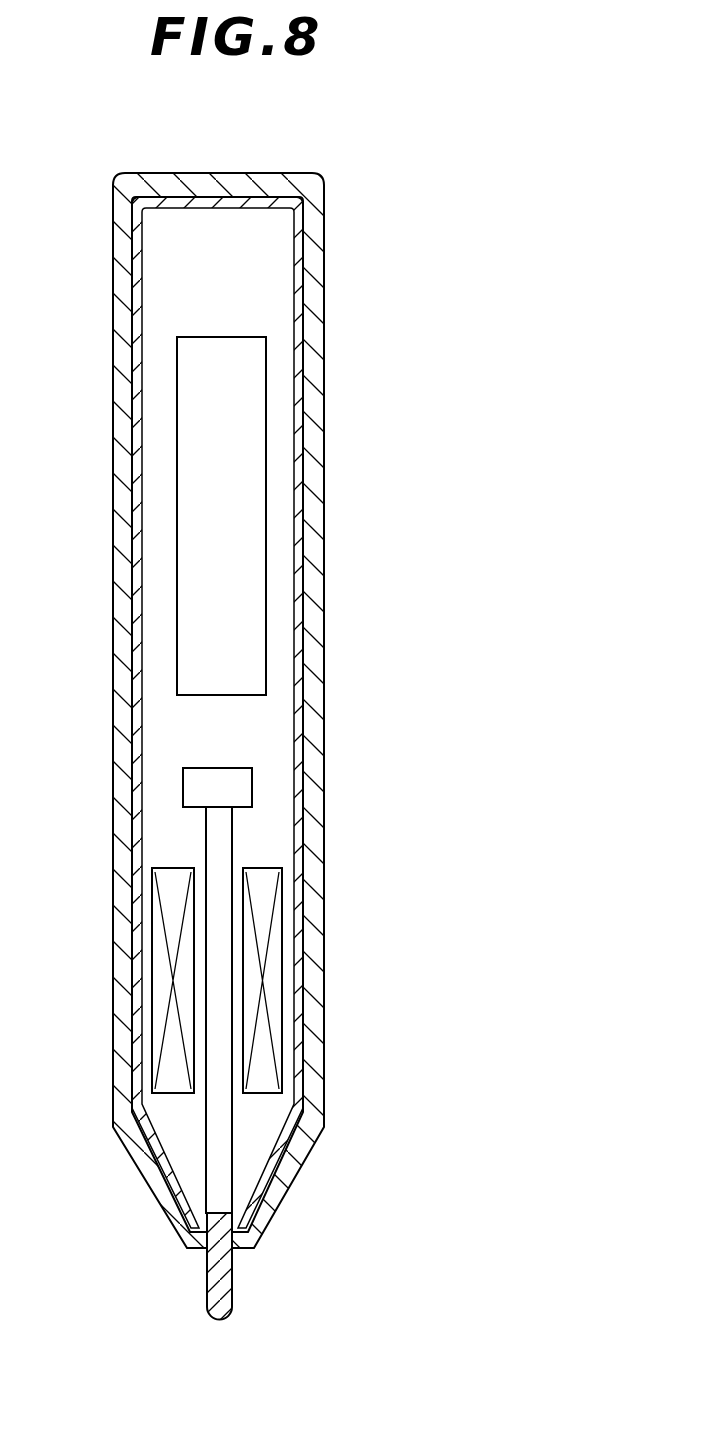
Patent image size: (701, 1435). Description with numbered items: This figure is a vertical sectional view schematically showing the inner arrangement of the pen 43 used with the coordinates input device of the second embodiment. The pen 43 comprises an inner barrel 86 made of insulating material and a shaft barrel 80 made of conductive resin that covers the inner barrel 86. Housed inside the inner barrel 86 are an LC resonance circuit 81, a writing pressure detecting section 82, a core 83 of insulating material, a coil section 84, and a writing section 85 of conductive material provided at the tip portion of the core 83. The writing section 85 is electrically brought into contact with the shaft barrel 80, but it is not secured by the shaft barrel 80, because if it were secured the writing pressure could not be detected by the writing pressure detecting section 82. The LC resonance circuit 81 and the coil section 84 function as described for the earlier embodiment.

The pen 43 is at (346, 674).
The shaft barrel 80 is at (317, 430).
The LC resonance circuit 81 is at (248, 555).
The writing pressure detecting section 82 is at (242, 790).
The core 83 is at (227, 858).
The coil section 84 is at (270, 980).
The writing section 85 is at (233, 1297).
The inner barrel 86 is at (298, 341).